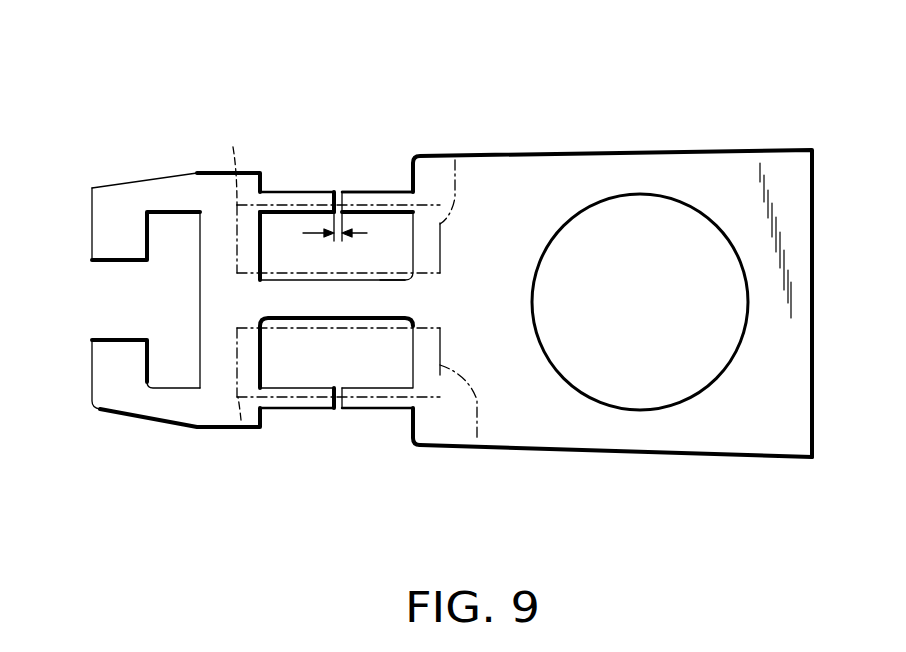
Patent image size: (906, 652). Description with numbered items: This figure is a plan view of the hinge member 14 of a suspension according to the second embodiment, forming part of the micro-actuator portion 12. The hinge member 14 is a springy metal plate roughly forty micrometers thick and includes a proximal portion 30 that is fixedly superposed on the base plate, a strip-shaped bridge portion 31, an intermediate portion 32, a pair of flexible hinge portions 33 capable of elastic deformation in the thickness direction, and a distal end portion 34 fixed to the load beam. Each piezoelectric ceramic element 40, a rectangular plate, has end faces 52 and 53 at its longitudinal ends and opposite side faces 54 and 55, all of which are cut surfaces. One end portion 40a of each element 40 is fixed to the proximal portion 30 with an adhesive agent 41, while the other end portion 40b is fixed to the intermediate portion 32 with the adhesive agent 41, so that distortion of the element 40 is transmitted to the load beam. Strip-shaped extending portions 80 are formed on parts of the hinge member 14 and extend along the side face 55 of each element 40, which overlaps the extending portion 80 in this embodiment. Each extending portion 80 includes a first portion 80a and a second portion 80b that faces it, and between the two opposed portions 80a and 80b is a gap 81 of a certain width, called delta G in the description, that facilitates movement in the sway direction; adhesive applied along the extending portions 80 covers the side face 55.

The micro-actuator portion 12 is at (489, 171).
The hinge member 14 is at (247, 167).
The proximal portion 30 is at (557, 430).
The bridge portion 31 is at (383, 378).
The intermediate portion 32 is at (207, 333).
The flexible hinge portions 33 is at (164, 192).
The distal end portion 34 is at (102, 228).
The piezoelectric ceramic element 40 is at (381, 204).
The one end portion 40a is at (455, 160).
The other end portion 40b is at (233, 147).
The adhesive agent 41 is at (258, 324).
The end face 52 is at (440, 258).
The end face 53 is at (222, 210).
The side face 54 is at (387, 311).
The side face 55 is at (325, 203).
The extending portion 80 is at (333, 174).
The first portion 80a is at (277, 191).
The second portion 80b is at (395, 191).
The gap 81 is at (342, 192).